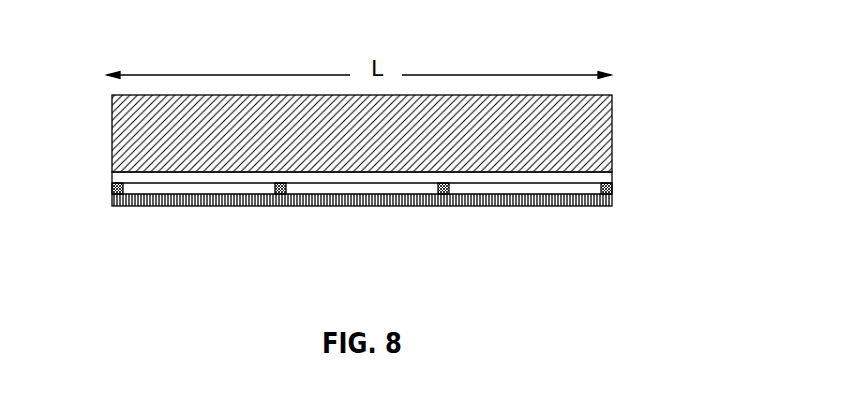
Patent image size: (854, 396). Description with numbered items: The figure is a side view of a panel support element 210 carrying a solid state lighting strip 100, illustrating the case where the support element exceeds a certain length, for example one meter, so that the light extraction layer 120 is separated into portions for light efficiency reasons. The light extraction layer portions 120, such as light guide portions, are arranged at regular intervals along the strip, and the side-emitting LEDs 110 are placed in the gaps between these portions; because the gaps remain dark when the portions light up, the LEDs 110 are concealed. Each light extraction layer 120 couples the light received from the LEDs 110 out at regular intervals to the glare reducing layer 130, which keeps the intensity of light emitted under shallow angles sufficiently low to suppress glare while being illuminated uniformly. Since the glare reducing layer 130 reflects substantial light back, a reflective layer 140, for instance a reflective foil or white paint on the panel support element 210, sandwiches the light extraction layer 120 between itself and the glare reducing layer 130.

The panel support element 210 is at (613, 117).
The solid state lighting strip 100 is at (326, 236).
The side-emitting LEDs 110 is at (447, 193).
The light extraction layer 120 is at (512, 188).
The glare reducing layer 130 is at (263, 203).
The reflective layer 140 is at (153, 175).